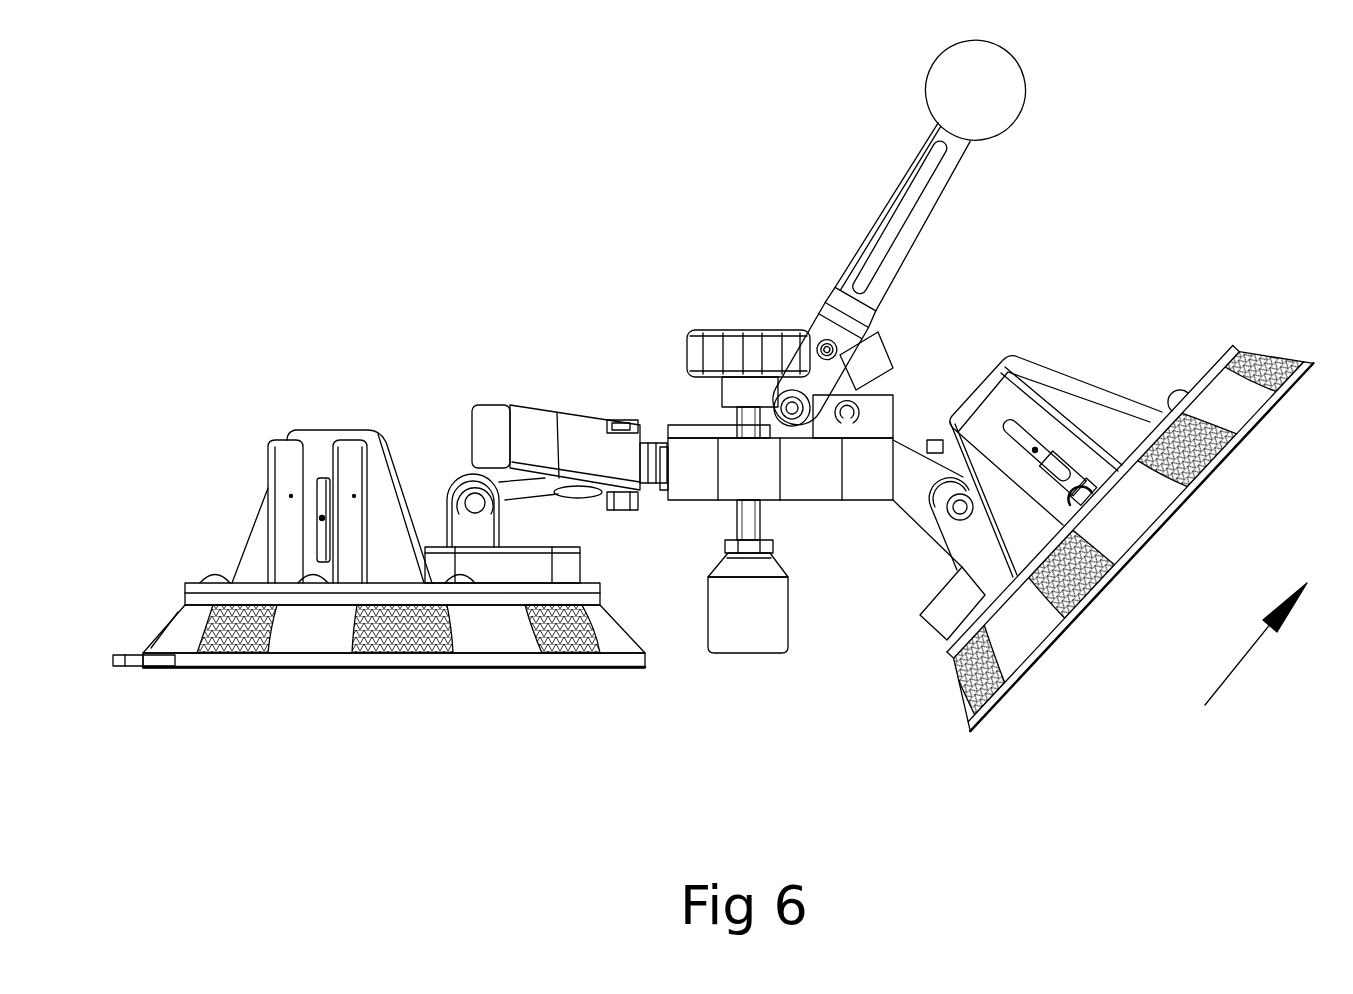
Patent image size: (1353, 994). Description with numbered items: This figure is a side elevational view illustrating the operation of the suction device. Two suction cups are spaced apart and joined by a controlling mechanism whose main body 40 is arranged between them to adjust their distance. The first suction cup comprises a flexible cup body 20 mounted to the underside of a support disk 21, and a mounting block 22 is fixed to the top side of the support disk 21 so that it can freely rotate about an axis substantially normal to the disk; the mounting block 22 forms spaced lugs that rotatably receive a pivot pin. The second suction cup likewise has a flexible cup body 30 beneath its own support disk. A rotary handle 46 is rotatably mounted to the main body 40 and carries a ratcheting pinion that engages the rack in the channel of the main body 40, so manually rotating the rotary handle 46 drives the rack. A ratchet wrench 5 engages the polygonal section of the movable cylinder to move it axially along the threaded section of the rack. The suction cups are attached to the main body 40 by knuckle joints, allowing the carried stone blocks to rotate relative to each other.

The ratchet wrench 5 is at (577, 445).
The flexible cup body 20 is at (402, 631).
The support disk 21 is at (200, 585).
The mounting block 22 is at (590, 652).
The flexible cup body 30 is at (1235, 402).
The main body 40 is at (817, 480).
The rotary handle 46 is at (923, 197).